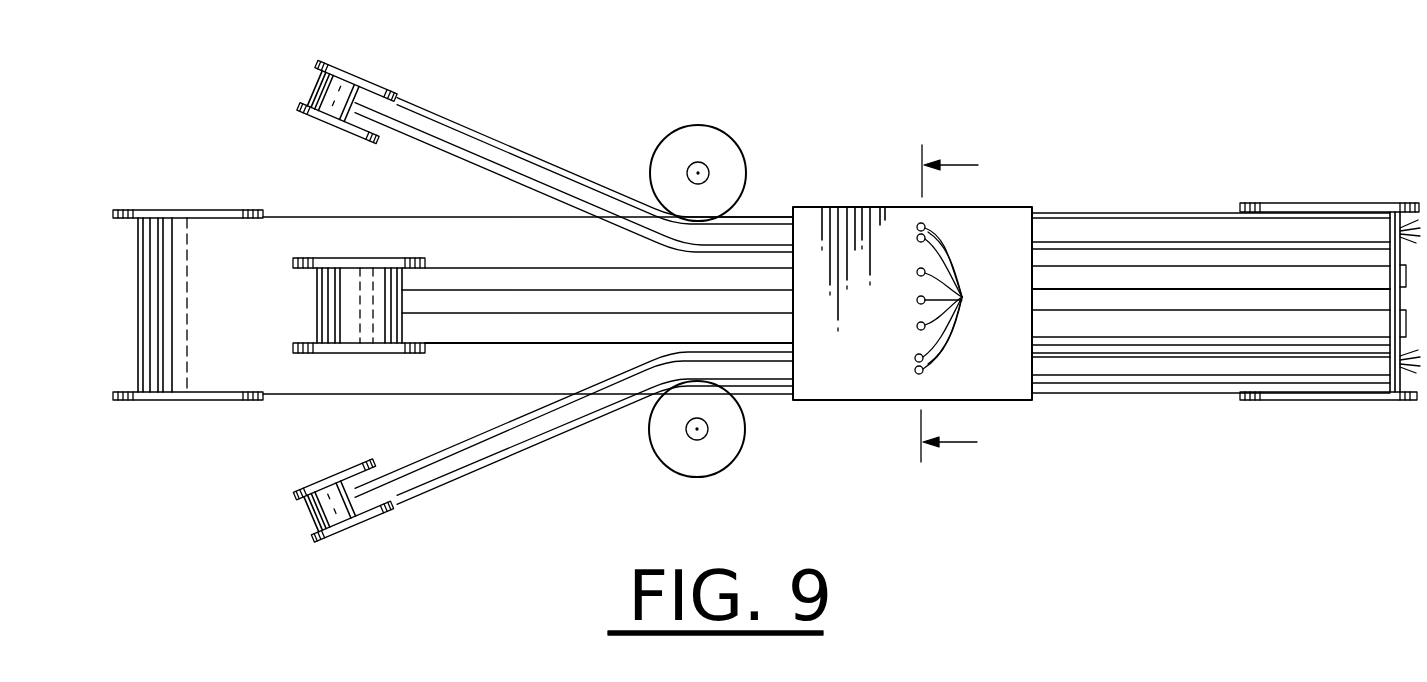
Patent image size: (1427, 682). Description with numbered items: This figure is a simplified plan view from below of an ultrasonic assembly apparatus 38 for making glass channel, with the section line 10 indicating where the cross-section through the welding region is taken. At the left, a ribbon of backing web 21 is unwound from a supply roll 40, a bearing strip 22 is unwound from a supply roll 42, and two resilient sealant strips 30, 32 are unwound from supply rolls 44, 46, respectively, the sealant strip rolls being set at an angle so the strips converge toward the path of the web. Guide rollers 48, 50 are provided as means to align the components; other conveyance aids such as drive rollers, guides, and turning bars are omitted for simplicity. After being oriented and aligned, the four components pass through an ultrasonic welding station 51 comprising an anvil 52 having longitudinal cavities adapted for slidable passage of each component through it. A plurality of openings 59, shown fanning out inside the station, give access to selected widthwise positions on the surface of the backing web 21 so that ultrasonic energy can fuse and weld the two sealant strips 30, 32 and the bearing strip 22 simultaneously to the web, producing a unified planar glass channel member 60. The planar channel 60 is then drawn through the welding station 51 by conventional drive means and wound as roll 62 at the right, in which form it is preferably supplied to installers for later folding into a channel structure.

The section line 10- 10 is at (975, 305).
The backing web 21 is at (288, 380).
The bearing strip 22 is at (467, 282).
The resilient sealant strip 30 is at (447, 145).
The resilient sealant strip 32 is at (480, 450).
The ultrasonic assembly apparatus 38 is at (931, 86).
The supply roll 40 is at (177, 215).
The supply roll 42 is at (315, 257).
The supply roll 44 is at (365, 88).
The supply roll 46 is at (365, 520).
The guide roller 48 is at (713, 145).
The guide roller 50 is at (665, 430).
The ultrasonic welding station 51 is at (877, 412).
The anvil 52 is at (1017, 403).
The openings 59 is at (962, 297).
The planar glass channel member 60 is at (1088, 275).
The roll 62 is at (1303, 227).